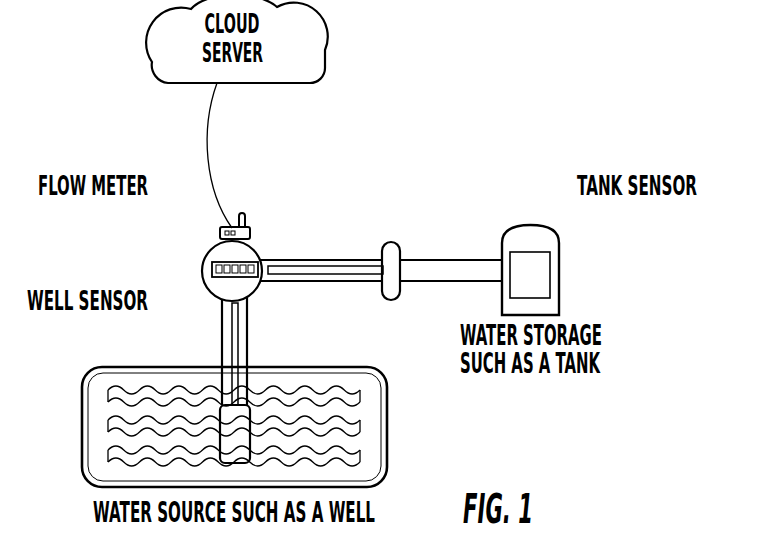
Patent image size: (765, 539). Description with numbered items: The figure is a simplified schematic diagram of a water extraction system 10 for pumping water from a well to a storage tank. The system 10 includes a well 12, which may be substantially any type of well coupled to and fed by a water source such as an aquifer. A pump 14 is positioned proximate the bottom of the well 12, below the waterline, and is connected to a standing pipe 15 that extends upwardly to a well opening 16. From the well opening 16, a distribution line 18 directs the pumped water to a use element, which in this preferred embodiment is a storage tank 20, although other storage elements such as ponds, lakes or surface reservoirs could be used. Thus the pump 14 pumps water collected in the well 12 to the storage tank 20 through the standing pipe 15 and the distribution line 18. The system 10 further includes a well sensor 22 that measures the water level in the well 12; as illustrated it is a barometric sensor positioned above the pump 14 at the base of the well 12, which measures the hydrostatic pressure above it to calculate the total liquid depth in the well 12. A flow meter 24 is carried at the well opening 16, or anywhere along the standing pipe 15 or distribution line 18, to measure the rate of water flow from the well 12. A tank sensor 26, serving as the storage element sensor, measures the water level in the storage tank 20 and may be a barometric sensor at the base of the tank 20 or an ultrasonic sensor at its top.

The water extraction system 10 is at (423, 118).
The well 12 is at (400, 412).
The pump 14 is at (233, 445).
The standing pipe 15 is at (247, 333).
The well opening 16 is at (262, 256).
The distribution line 18 is at (350, 266).
The storage tank 20 is at (522, 226).
The well sensor 22 is at (215, 412).
The flow meter 24 is at (202, 268).
The tank sensor 26 is at (540, 266).